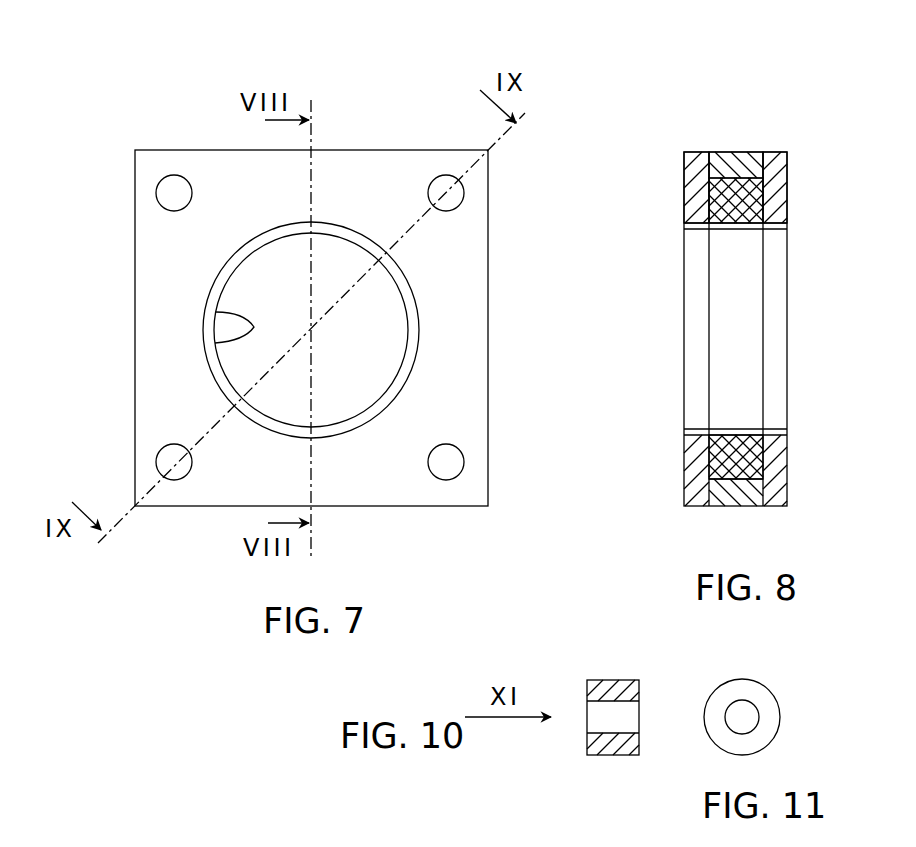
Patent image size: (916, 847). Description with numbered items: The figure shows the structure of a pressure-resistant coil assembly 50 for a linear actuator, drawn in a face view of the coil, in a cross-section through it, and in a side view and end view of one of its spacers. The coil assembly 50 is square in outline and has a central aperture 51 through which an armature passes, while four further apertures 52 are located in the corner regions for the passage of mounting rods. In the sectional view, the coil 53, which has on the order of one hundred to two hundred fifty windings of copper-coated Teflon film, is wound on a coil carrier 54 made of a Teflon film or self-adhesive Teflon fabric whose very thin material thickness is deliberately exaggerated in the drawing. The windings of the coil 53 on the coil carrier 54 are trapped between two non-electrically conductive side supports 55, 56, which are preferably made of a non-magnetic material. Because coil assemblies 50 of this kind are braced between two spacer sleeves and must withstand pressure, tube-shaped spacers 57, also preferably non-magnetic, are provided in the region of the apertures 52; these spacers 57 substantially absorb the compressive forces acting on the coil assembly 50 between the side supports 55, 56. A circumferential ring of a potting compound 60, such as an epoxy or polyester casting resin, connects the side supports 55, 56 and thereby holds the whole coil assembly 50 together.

In FIG. 7, the coil assembly 50 is at (259, 267).
In FIG. 7, the central aperture 51 is at (238, 337).
In FIG. 7, the further apertures 52 is at (176, 195).
In FIG. 8, the coil 53 is at (745, 455).
In FIG. 7, the coil carrier 54 is at (234, 397).
In FIG. 8, the coil carrier 54 is at (697, 228).
In FIG. 8, the side support 55 is at (692, 193).
In FIG. 7, the side support 56 is at (155, 278).
In FIG. 8, the side support 56 is at (777, 205).
In FIG. 10, the spacer 57 is at (620, 695).
In FIG. 8, the potting compound 60 is at (728, 152).